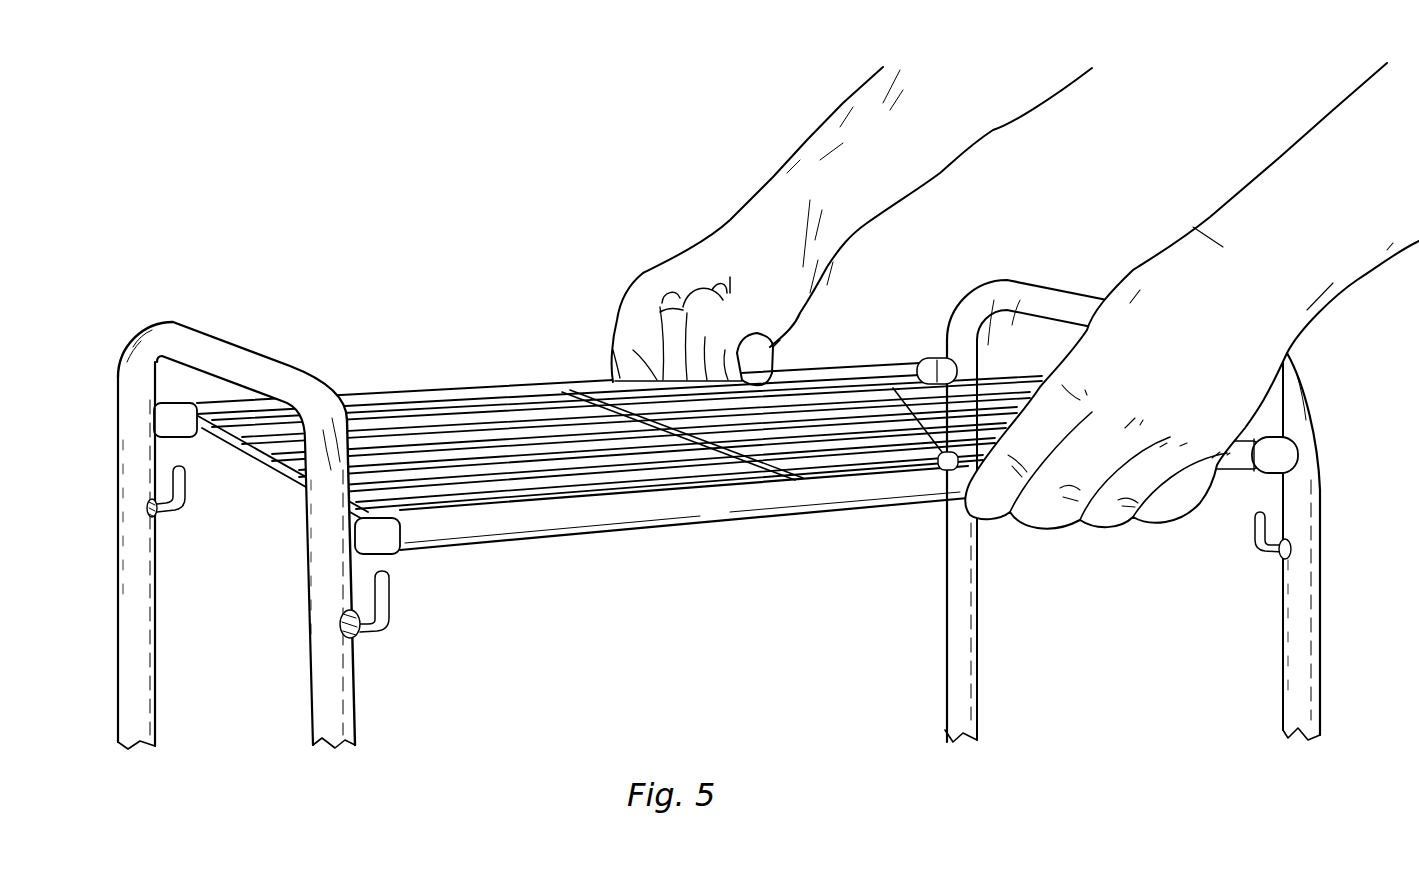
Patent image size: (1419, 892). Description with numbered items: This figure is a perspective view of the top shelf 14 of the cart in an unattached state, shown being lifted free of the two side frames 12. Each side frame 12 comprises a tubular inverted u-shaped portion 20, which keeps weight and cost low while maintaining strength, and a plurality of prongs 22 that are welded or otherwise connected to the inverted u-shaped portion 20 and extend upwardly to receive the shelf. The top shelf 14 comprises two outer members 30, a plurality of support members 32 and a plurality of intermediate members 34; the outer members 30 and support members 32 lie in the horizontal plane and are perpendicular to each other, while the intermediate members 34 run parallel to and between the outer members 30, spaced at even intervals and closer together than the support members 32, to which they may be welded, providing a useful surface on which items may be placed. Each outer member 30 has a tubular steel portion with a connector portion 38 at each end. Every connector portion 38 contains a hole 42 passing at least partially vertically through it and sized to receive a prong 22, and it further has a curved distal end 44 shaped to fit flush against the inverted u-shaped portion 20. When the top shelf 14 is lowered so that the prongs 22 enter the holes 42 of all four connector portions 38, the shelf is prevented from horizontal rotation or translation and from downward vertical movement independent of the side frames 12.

The side frame 12 is at (160, 645).
The top shelf 14 is at (857, 365).
The inverted u-shaped portion 20 is at (172, 320).
The prong 22 is at (187, 514).
The outer member 30 is at (603, 518).
The support member 32 is at (697, 447).
The intermediate member 34 is at (462, 453).
The connector portion 38 is at (175, 441).
The hole 42 is at (190, 401).
The curved distal end 44 is at (153, 418).